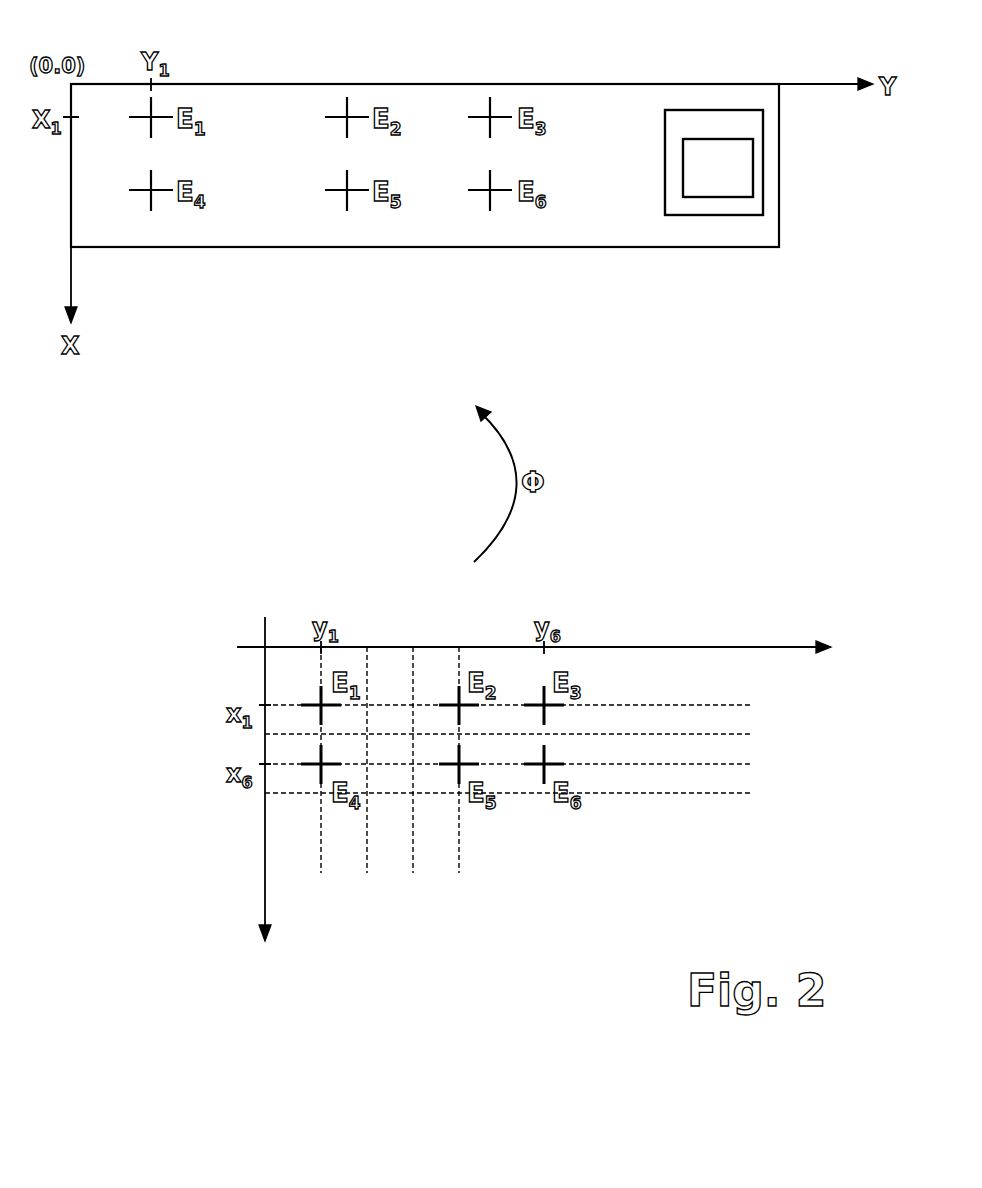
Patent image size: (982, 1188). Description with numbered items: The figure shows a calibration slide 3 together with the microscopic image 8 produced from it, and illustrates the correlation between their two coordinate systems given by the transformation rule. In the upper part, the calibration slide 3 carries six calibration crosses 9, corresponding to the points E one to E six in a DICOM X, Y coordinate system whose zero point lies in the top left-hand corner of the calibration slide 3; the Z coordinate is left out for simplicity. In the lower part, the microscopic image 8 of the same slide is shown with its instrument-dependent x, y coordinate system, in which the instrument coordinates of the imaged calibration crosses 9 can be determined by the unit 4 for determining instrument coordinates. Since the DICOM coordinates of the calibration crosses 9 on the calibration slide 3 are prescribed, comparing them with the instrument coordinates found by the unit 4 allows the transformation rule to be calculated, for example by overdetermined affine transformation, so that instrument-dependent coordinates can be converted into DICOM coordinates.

The calibration slide 3 is at (557, 246).
The unit for determining instrument coordinates 4 is at (235, 672).
The microscopic image 8 is at (521, 914).
The calibration crosses 9 is at (160, 209).